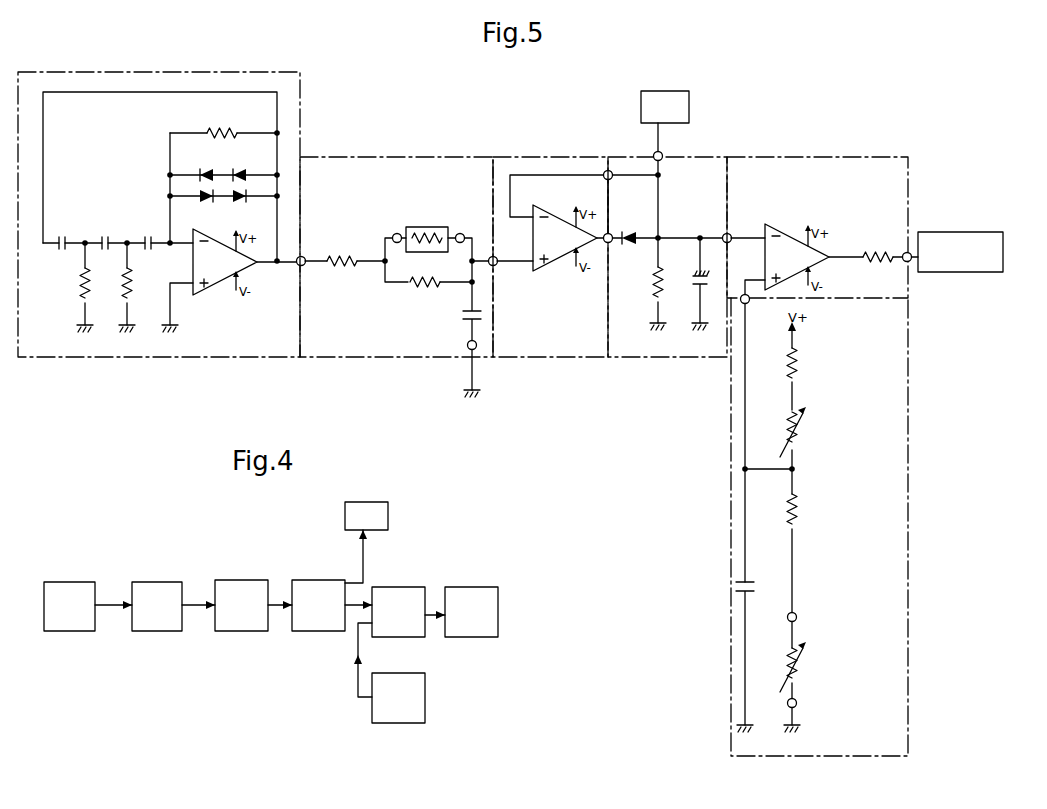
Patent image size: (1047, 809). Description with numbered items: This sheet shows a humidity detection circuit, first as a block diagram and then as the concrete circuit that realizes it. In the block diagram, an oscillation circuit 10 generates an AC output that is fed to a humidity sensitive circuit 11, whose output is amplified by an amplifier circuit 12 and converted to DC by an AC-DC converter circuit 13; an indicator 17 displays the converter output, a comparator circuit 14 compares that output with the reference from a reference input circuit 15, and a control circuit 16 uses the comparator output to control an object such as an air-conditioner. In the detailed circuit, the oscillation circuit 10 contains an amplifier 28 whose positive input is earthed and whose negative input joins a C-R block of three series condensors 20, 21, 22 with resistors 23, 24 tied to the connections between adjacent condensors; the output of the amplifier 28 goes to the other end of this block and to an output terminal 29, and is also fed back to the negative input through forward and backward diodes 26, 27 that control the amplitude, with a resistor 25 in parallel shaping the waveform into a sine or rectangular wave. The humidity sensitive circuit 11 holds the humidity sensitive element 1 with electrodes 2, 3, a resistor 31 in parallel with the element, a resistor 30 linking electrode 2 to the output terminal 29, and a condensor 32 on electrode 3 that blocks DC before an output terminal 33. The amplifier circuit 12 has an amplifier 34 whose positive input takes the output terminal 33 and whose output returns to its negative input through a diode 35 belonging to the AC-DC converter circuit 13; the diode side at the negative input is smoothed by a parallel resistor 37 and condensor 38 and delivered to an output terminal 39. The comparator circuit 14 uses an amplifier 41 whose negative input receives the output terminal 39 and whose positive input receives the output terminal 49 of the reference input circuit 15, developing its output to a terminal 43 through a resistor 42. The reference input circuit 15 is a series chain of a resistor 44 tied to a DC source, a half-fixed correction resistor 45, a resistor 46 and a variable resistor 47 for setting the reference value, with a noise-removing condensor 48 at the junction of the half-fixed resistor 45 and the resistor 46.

In FIG. 5, the humidity sensitive element 1 is at (428, 226).
In FIG. 5, the electrode 2 is at (397, 233).
In FIG. 5, the electrode 3 is at (461, 233).
In FIG. 5, the oscillation circuit 10 is at (108, 72).
In FIG. 4, the oscillation circuit 10 is at (65, 582).
In FIG. 5, the humidity sensitive circuit 11 is at (354, 157).
In FIG. 4, the humidity sensitive circuit 11 is at (154, 582).
In FIG. 5, the amplifier circuit 12 is at (527, 157).
In FIG. 4, the amplifier circuit 12 is at (227, 580).
In FIG. 5, the AC-DC converter circuit 13 is at (644, 357).
In FIG. 4, the AC-DC converter circuit 13 is at (298, 580).
In FIG. 5, the comparator circuit 14 is at (843, 157).
In FIG. 4, the comparator circuit 14 is at (388, 587).
In FIG. 5, the reference input circuit 15 is at (908, 346).
In FIG. 4, the reference input circuit 15 is at (412, 673).
In FIG. 5, the control circuit 16 is at (1032, 225).
In FIG. 4, the control circuit 16 is at (455, 587).
In FIG. 5, the indicator 17 is at (683, 91).
In FIG. 4, the indicator 17 is at (388, 515).
In FIG. 5, the condensor 20 is at (64, 250).
In FIG. 5, the condensor 21 is at (104, 250).
In FIG. 5, the condensor 22 is at (150, 250).
In FIG. 5, the resistor 23 is at (97, 312).
In FIG. 5, the resistor 24 is at (141, 312).
In FIG. 5, the resistor 25 is at (218, 131).
In FIG. 5, the diode 26 is at (203, 175).
In FIG. 5, the diode 27 is at (203, 196).
In FIG. 5, the amplifier 28 is at (210, 289).
In FIG. 5, the output terminal 29 is at (293, 269).
In FIG. 5, the resistor 30 is at (333, 269).
In FIG. 5, the resistor 31 is at (416, 287).
In FIG. 5, the condensor 32 is at (465, 318).
In FIG. 5, the output terminal 33 is at (497, 266).
In FIG. 5, the amplifier 34 is at (560, 217).
In FIG. 5, the diode 35 is at (628, 233).
In FIG. 5, the resistor 37 is at (655, 292).
In FIG. 5, the condensor 38 is at (698, 285).
In FIG. 5, the output terminal 39 is at (718, 235).
In FIG. 5, the amplifier 41 is at (781, 222).
In FIG. 5, the resistor 42 is at (878, 252).
In FIG. 5, the terminal 43 is at (907, 252).
In FIG. 5, the resistor 44 is at (799, 360).
In FIG. 5, the half-fixed resistor 45 is at (799, 426).
In FIG. 5, the resistor 46 is at (797, 500).
In FIG. 5, the variable resistor 47 is at (799, 664).
In FIG. 5, the condensor 48 is at (750, 579).
In FIG. 5, the output terminal 49 is at (746, 319).